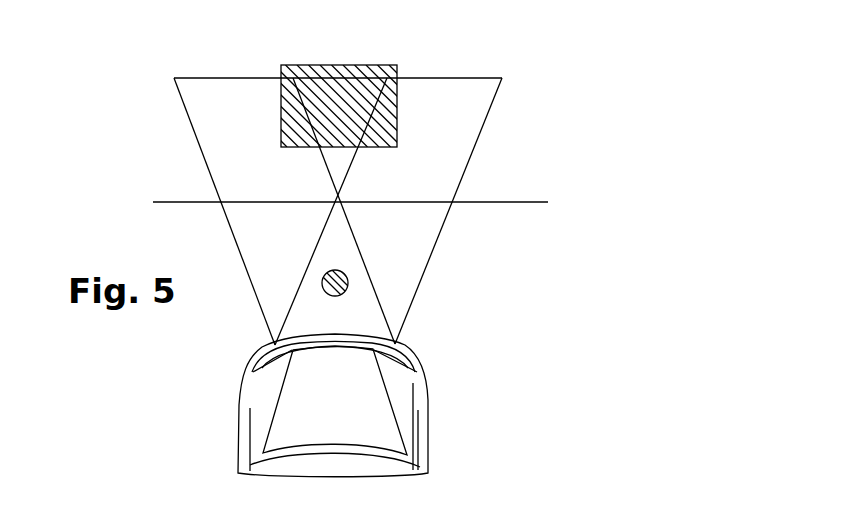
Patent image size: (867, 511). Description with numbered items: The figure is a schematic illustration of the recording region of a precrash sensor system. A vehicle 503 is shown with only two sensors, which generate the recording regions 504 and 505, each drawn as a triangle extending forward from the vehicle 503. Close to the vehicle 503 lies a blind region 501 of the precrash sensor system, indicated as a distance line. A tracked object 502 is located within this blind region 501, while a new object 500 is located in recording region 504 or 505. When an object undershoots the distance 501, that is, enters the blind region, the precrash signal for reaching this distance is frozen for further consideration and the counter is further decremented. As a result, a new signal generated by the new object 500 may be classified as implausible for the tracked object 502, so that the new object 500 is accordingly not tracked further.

The new object 500 is at (346, 77).
The blind region 501 is at (520, 202).
The tracked object 502 is at (348, 283).
The vehicle 503 is at (400, 397).
The recording region 504 is at (200, 146).
The recording region 505 is at (492, 111).